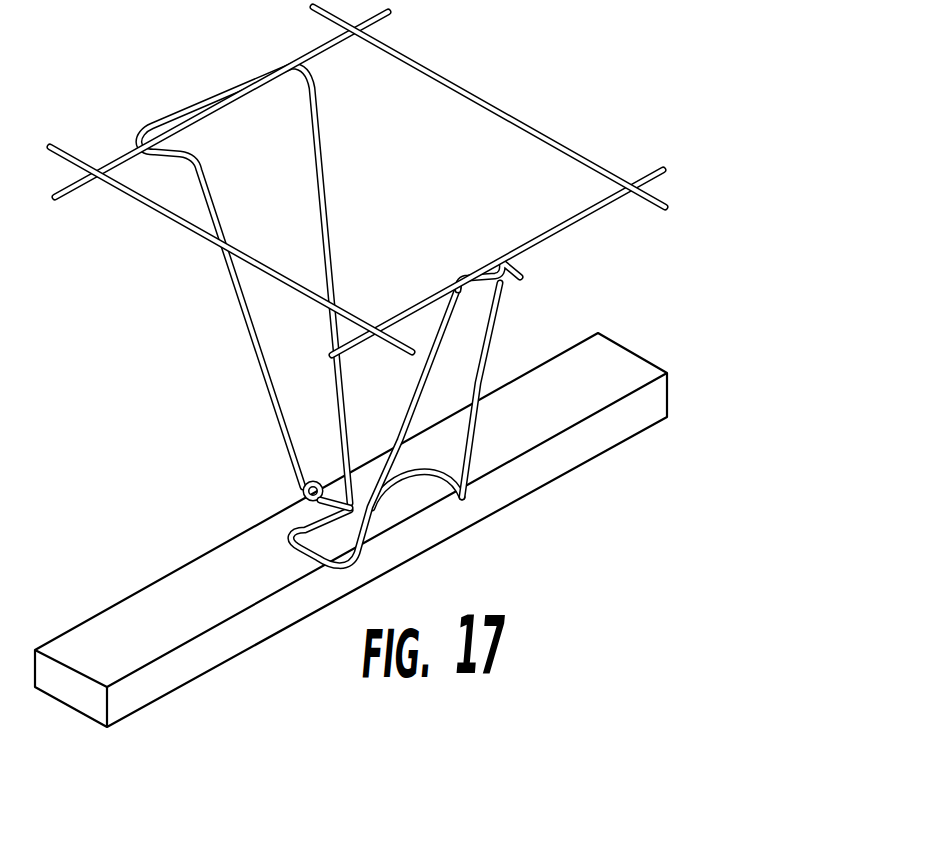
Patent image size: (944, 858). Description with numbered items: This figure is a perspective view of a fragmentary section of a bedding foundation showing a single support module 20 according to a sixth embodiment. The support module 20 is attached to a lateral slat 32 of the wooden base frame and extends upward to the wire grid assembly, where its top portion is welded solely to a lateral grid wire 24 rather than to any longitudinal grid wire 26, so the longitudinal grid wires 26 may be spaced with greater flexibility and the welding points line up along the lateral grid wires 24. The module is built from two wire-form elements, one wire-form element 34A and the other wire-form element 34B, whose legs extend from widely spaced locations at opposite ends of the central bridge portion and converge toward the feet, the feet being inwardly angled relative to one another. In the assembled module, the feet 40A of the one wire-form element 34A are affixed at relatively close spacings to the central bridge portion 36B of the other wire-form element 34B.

The support module 20 is at (363, 324).
The lateral grid wire 24 is at (590, 213).
The longitudinal grid wire 26 is at (543, 130).
The lateral slat 32 is at (582, 393).
The wire-form element 34A is at (209, 292).
The wire-form element 34B is at (474, 422).
The central bridge portion 36B is at (402, 490).
The foot 40A is at (305, 485).